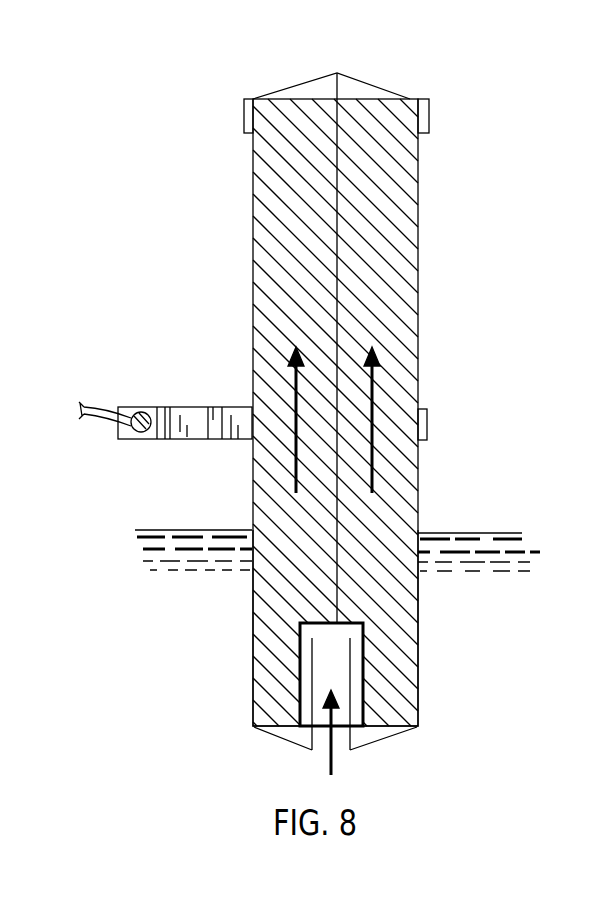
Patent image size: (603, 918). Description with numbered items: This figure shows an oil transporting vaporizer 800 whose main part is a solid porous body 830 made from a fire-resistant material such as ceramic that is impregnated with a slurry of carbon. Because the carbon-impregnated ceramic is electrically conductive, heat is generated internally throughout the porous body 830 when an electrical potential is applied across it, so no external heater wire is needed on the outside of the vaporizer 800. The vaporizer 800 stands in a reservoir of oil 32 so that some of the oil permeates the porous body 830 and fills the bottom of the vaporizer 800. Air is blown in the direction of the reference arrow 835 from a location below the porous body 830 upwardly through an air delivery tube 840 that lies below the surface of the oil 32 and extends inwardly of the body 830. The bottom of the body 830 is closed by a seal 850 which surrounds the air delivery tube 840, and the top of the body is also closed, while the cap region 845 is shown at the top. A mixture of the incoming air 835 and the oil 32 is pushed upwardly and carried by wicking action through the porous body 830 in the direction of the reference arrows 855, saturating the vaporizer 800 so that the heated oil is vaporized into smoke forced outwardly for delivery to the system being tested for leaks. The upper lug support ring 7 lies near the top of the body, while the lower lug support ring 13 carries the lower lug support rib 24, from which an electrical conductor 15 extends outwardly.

The upper lug support ring 7 is at (430, 118).
The lower lug support ring 13 is at (430, 422).
The electrical conductor 15 is at (100, 424).
The lower lug support rib 24 is at (196, 412).
The reservoir of oil 32 is at (453, 533).
The oil transporting vaporizer 800 is at (436, 428).
The solid porous body 830 is at (252, 617).
The incoming air 835 is at (332, 758).
The air delivery tube 840 is at (312, 660).
The anchor cap 845 is at (365, 83).
The seal 850 is at (290, 733).
The reference arrows 855 is at (372, 472).